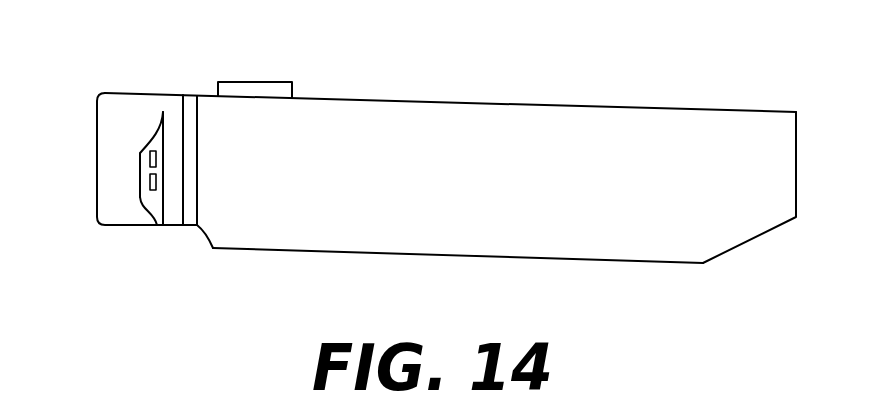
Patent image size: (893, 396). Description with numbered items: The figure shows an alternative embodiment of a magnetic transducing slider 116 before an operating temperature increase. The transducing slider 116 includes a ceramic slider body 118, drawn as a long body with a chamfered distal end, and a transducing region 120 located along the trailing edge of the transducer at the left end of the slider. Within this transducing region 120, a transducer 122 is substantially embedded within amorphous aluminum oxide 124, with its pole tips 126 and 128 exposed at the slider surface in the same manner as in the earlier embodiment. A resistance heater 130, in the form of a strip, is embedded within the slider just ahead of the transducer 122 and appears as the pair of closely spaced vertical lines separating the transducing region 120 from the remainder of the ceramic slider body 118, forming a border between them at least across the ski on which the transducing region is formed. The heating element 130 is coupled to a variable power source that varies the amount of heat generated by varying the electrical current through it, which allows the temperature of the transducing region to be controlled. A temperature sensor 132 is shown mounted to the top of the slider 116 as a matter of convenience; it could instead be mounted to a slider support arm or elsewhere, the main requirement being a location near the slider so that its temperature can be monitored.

The transducing slider 116 is at (613, 132).
The ceramic slider body 118 is at (773, 172).
The transducing region 120 is at (118, 110).
The transducer 122 is at (138, 158).
The amorphous aluminum oxide 124 is at (122, 200).
The pole tip 126 is at (157, 227).
The pole tip 128 is at (168, 228).
The resistance heater 130 is at (192, 177).
The temperature sensor 132 is at (252, 88).